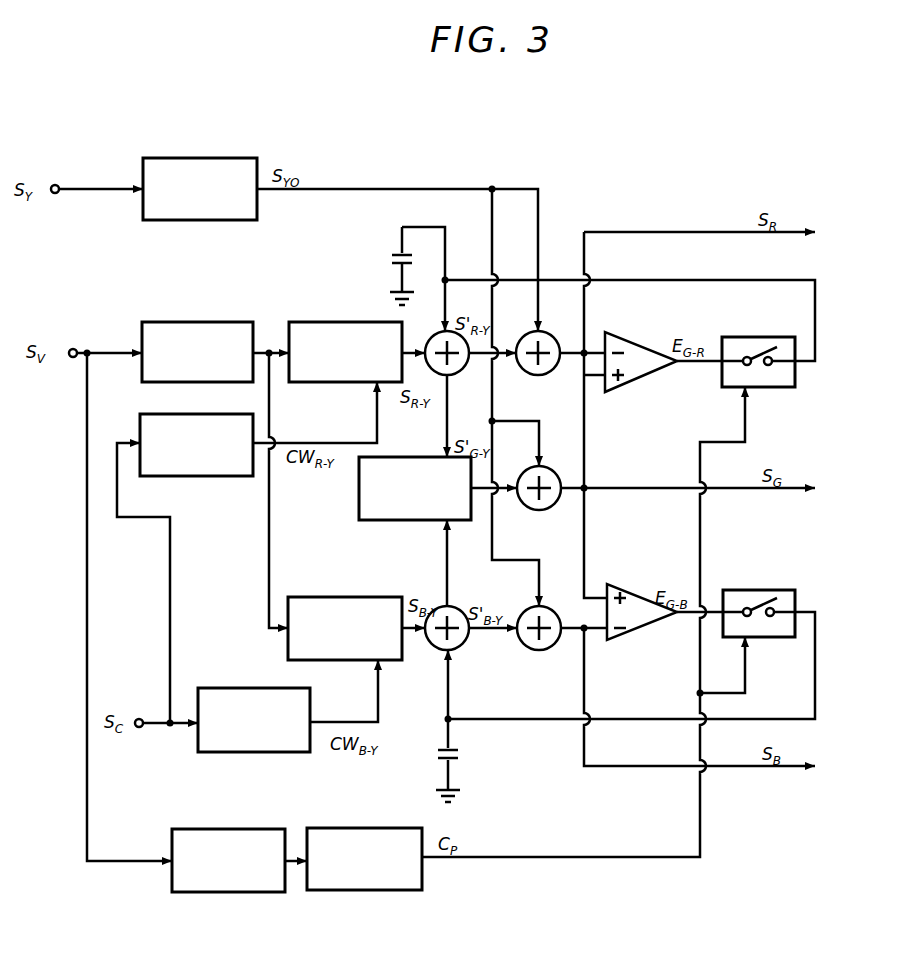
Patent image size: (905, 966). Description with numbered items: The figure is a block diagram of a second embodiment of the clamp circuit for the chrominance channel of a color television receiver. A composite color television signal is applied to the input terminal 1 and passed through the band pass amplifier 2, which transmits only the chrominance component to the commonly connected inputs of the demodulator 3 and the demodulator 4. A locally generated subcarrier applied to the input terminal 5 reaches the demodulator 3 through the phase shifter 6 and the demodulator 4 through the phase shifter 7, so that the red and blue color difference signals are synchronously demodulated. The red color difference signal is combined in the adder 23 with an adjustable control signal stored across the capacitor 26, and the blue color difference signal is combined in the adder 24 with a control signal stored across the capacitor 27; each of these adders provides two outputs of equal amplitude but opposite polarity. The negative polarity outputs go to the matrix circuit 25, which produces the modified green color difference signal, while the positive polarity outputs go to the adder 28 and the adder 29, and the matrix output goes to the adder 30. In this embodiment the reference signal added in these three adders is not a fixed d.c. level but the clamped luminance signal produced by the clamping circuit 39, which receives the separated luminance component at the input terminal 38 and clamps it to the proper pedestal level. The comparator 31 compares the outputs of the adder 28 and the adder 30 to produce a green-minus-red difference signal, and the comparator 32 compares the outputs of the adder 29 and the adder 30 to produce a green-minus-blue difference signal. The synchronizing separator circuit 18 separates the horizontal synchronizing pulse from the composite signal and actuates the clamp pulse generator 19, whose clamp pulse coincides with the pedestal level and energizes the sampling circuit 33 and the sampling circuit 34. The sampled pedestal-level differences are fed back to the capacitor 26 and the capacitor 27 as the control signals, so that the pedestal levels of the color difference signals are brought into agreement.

The input terminal 1 is at (68, 360).
The band pass amplifier 2 is at (192, 322).
The demodulator 3 is at (313, 320).
The demodulator 4 is at (324, 598).
The input terminal 5 is at (141, 730).
The phase shifter 6 is at (237, 478).
The phase shifter 7 is at (305, 754).
The synchronizing separator circuit 18 is at (258, 895).
The clamp pulse generator 19 is at (400, 892).
The adder 23 is at (460, 372).
The adder 24 is at (462, 650).
The matrix circuit 25 is at (405, 521).
The capacitor 26 is at (395, 262).
The capacitor 27 is at (442, 760).
The adder 28 is at (530, 374).
The adder 29 is at (540, 650).
The adder 30 is at (542, 510).
The comparator 31 is at (648, 394).
The comparator 32 is at (640, 642).
The sampling circuit 33 is at (778, 390).
The sampling circuit 34 is at (775, 640).
The input terminal 38 is at (52, 196).
The clamping circuit 39 is at (193, 222).